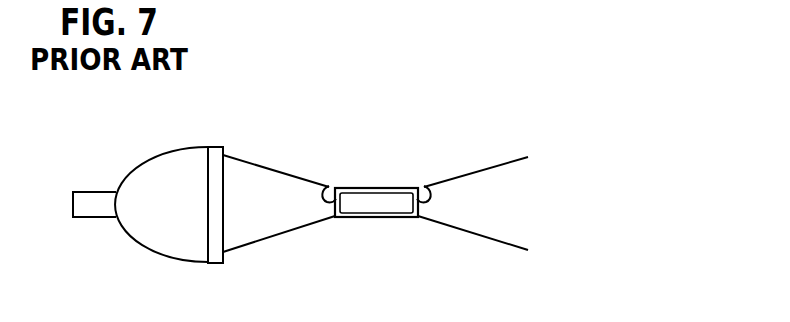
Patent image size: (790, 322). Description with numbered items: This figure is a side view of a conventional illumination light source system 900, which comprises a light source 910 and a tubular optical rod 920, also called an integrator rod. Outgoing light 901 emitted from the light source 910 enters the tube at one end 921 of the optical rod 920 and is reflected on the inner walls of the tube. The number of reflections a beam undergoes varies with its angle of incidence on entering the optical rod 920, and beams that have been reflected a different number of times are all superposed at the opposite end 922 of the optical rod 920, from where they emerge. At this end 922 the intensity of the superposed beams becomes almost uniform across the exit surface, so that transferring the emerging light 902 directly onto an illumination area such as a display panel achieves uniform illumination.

The illumination light source system 900 is at (321, 104).
The light source 910 is at (163, 242).
The outgoing light 901 is at (278, 223).
The optical rod 920 is at (378, 207).
The end of the optical rod 921 is at (325, 185).
The end of the optical rod 922 is at (418, 195).
The second light guide (fiber bundle) 902 is at (472, 218).